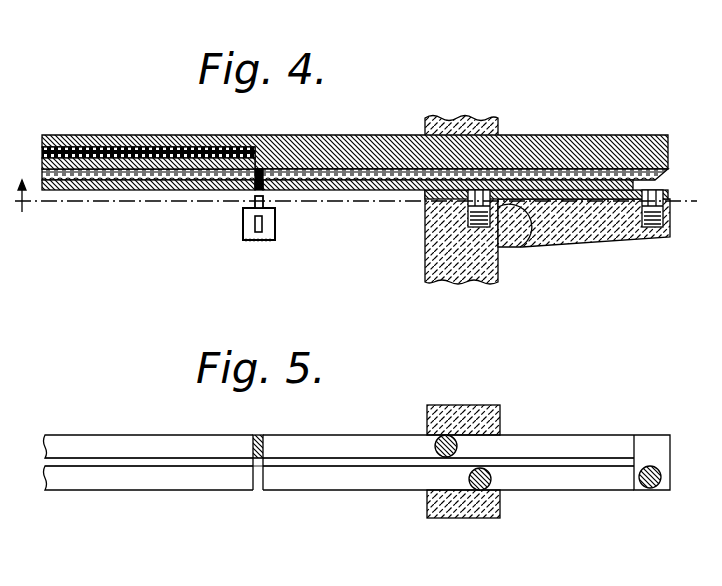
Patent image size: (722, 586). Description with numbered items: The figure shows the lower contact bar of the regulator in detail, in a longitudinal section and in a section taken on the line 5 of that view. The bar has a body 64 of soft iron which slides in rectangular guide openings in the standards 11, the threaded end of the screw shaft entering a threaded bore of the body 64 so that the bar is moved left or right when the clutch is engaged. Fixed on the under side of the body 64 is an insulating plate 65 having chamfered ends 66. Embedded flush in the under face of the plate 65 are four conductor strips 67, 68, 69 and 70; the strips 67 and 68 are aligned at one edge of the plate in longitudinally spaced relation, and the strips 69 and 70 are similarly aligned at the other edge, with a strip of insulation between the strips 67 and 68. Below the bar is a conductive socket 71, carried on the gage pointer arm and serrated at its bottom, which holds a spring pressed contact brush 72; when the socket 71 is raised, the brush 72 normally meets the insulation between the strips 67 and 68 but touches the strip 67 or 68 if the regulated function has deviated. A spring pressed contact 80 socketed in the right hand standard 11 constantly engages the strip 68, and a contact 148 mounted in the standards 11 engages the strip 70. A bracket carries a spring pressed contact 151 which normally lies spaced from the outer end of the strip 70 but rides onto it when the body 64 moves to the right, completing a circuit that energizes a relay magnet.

In FIG. 4, the section line 5— 5 is at (356, 210).
In FIG. 4, the standard 11 is at (428, 268).
In FIG. 5, the standard 11 is at (432, 406).
In FIG. 4, the body of lower contact bar 64 is at (650, 118).
In FIG. 4, the insulating plate 65 is at (540, 170).
In FIG. 5, the insulating plate 65 is at (535, 462).
In FIG. 4, the chamfered ends 66 is at (655, 189).
In FIG. 5, the chamfered ends 66 is at (678, 418).
In FIG. 5, the conductor strip 67 is at (150, 414).
In FIG. 5, the conductor strip 68 is at (359, 423).
In FIG. 4, the conductor strip 69 is at (148, 192).
In FIG. 5, the conductor strip 69 is at (170, 490).
In FIG. 4, the conductor strip 70 is at (373, 191).
In FIG. 5, the conductor strip 70 is at (375, 490).
In FIG. 4, the conductive socket 71 is at (277, 230).
In FIG. 4, the contact brush 72 is at (258, 192).
In FIG. 5, the contact brush 72 is at (260, 433).
In FIG. 5, the spring pressed contact 80 is at (435, 443).
In FIG. 4, the contact 148 is at (503, 252).
In FIG. 5, the contact 148 is at (508, 490).
In FIG. 4, the spring pressed contact 151 is at (665, 214).
In FIG. 5, the spring pressed contact 151 is at (643, 490).